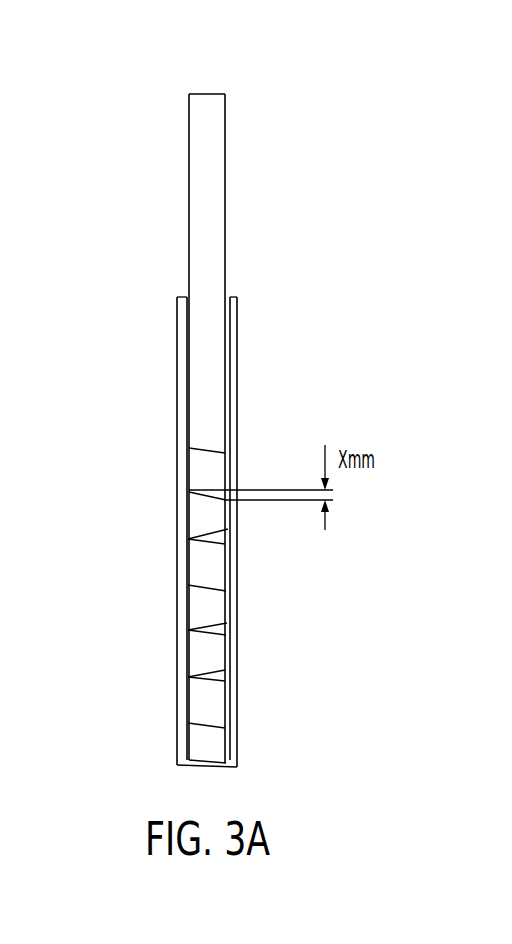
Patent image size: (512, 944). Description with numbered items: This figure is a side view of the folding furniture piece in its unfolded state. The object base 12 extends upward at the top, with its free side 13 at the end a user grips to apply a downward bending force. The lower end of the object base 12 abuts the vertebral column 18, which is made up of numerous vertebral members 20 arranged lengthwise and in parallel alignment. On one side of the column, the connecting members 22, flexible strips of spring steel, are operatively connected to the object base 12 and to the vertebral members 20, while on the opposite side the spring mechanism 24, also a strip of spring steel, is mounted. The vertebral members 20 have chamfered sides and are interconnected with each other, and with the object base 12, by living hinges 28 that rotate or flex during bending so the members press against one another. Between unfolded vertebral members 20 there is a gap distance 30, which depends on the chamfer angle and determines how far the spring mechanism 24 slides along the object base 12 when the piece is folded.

The object base 12 is at (213, 152).
The free side of object base 13 is at (210, 93).
The vertebral column 18 is at (310, 644).
The vertebral members 20 is at (217, 473).
The connecting members 22 is at (184, 374).
The spring mechanism 24 is at (233, 358).
The living hinges 28 is at (188, 492).
The gap distance 30 is at (358, 494).